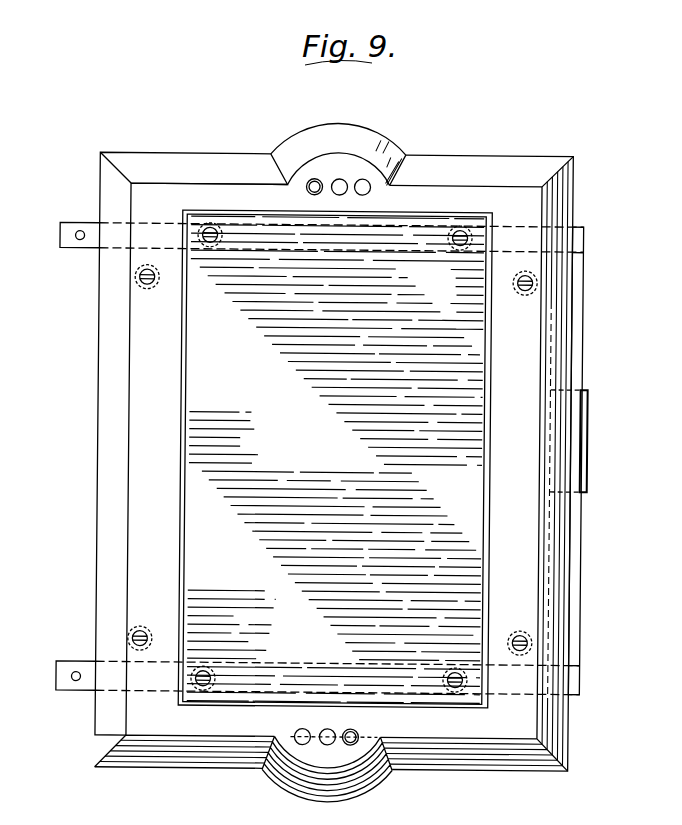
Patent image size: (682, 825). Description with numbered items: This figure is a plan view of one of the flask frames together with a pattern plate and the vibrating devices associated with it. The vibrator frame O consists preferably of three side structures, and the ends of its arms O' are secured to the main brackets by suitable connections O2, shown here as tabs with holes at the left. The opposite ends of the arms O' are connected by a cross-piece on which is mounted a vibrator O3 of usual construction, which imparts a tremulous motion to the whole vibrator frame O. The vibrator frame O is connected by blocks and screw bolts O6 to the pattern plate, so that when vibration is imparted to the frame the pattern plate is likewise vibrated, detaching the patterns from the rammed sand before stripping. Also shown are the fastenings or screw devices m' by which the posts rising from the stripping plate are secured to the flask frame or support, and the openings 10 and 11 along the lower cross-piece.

The vibrator frame O is at (355, 462).
The arms O' is at (72, 456).
The connections O2 is at (80, 232).
The vibrator O3 is at (587, 440).
The screw bolts O6 is at (457, 691).
The screw devices m' is at (376, 461).
The opening 10 is at (328, 736).
The opening 11 is at (361, 737).